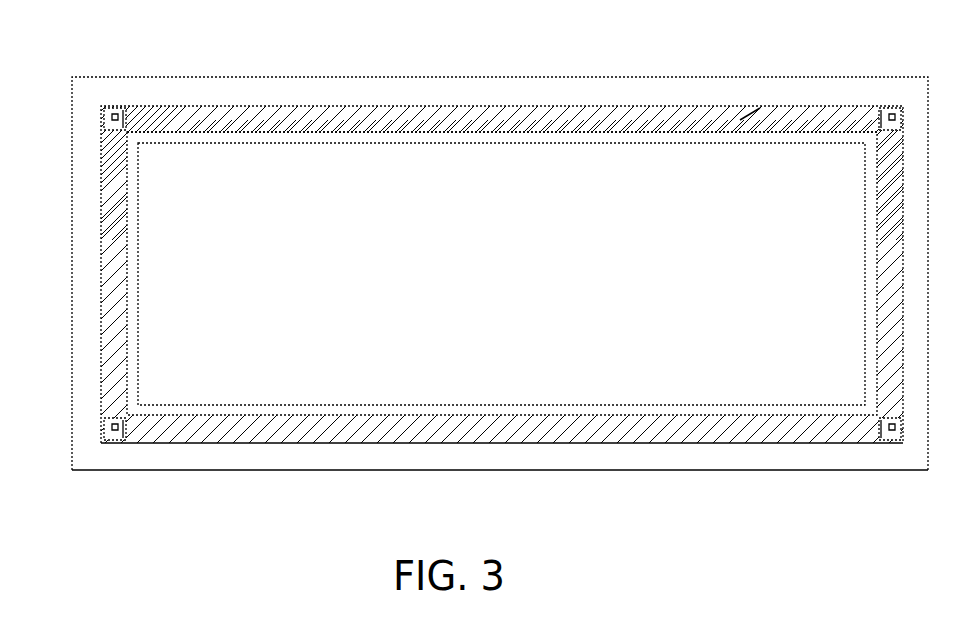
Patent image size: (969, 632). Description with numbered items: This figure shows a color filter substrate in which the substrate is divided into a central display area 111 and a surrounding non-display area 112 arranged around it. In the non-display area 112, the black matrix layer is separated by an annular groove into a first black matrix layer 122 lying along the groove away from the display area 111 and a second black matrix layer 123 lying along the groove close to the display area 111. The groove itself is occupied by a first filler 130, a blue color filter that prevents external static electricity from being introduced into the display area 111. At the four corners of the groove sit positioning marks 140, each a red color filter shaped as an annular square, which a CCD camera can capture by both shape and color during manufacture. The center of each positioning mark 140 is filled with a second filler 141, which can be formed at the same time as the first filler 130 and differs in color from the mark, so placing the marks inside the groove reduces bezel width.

The display area 111 is at (645, 202).
The non-display area 112 is at (746, 126).
The first black matrix layer 122 is at (189, 92).
The second black matrix layer 123 is at (270, 132).
The first filler 130 is at (462, 112).
The positioning mark 140 is at (111, 107).
The second filler 141 is at (110, 119).